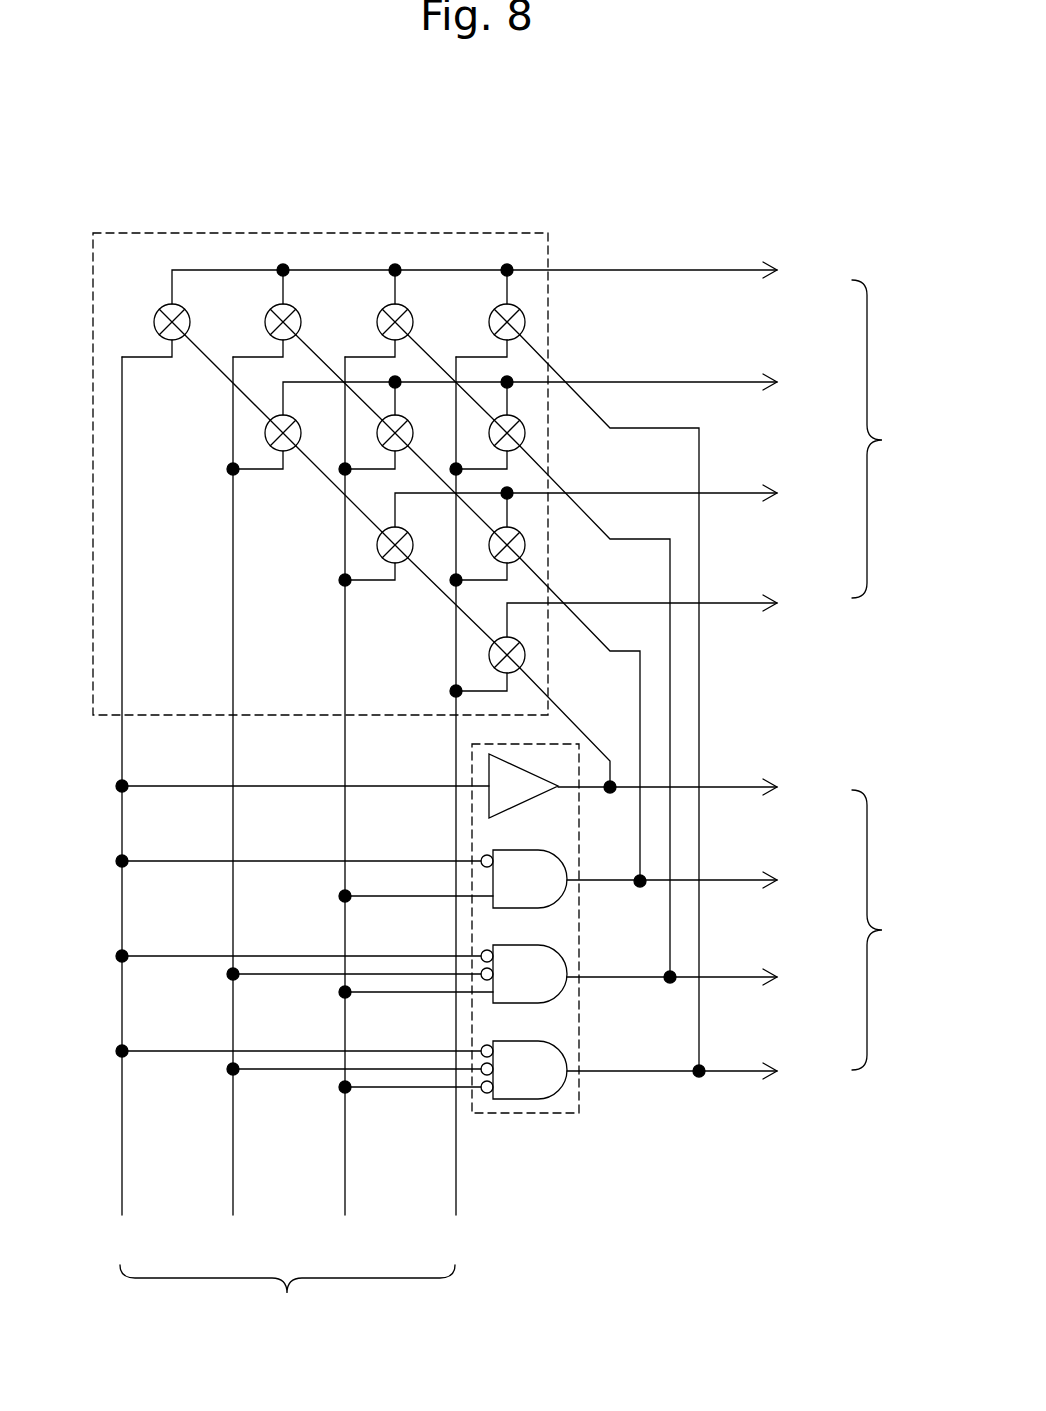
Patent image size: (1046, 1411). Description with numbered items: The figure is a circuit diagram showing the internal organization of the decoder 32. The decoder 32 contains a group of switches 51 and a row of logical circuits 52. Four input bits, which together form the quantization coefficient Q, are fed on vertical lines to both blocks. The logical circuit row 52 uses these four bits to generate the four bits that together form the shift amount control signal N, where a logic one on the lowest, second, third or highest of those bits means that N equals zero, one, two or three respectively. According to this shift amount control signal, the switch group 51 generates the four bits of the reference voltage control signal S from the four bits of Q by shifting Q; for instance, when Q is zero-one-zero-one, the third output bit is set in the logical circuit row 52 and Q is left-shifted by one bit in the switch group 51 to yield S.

The decoder 32 is at (160, 116).
The group of switches 51 is at (497, 233).
The row of logical circuits 52 is at (579, 1100).